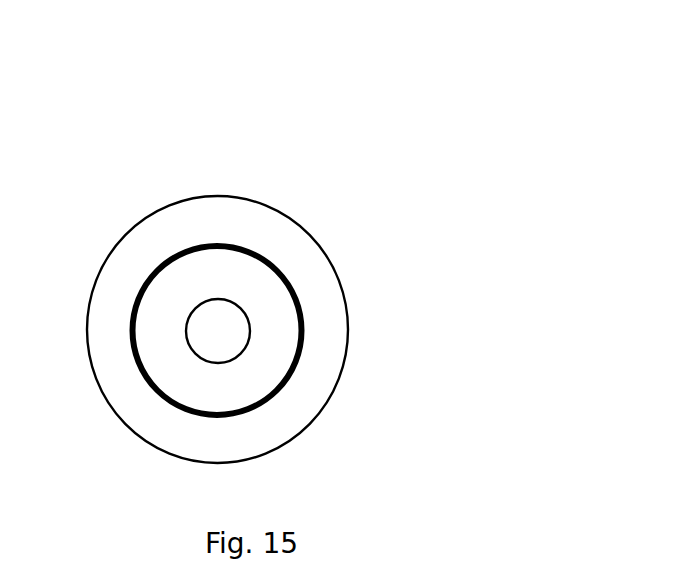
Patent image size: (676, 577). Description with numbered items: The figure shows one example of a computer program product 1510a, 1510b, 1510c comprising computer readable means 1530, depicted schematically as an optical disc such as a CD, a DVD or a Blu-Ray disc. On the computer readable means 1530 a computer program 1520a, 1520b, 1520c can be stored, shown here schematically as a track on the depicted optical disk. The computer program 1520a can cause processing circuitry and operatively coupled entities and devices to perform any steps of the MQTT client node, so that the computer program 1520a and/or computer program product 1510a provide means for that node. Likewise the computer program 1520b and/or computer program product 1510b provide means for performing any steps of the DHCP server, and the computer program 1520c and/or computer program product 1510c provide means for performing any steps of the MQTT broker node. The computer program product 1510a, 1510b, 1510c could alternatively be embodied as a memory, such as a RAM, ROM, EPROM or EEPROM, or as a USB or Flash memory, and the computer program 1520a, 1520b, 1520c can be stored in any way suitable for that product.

The computer program product 1510a is at (368, 240).
The computer program product 1510b is at (291, 309).
The computer program product 1510c is at (288, 326).
The computer program 1520a is at (300, 351).
The computer program 1520b is at (310, 330).
The computer program 1520c is at (307, 330).
The computer readable means 1530 is at (263, 439).